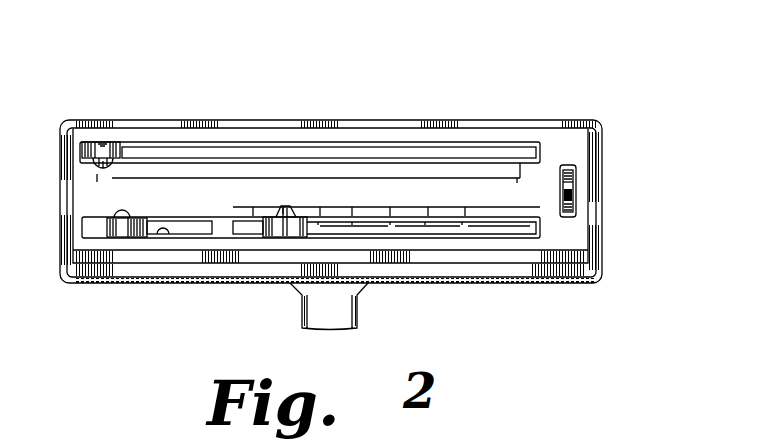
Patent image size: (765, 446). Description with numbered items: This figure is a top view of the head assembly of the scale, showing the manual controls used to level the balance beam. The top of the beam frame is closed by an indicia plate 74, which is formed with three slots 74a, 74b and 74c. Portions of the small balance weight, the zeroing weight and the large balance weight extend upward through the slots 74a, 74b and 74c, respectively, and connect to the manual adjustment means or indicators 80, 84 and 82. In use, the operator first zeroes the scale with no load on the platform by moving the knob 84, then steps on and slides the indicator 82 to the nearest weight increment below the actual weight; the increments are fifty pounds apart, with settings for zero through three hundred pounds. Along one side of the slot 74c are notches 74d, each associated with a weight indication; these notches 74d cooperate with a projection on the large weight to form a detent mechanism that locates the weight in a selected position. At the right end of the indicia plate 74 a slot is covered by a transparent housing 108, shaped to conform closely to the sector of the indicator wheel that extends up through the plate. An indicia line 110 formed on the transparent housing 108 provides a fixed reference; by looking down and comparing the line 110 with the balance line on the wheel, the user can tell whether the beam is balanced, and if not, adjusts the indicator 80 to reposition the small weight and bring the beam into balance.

The indicia plate 74 is at (553, 150).
The slot 74a is at (333, 150).
The slot 74b is at (163, 235).
The slot 74c is at (447, 225).
The notches 74d is at (387, 224).
The indicator 80 is at (107, 138).
The indicator 82 is at (284, 238).
The adjustment knob 84 is at (125, 240).
The transparent housing 108 is at (572, 198).
The indicia line 110 is at (573, 182).